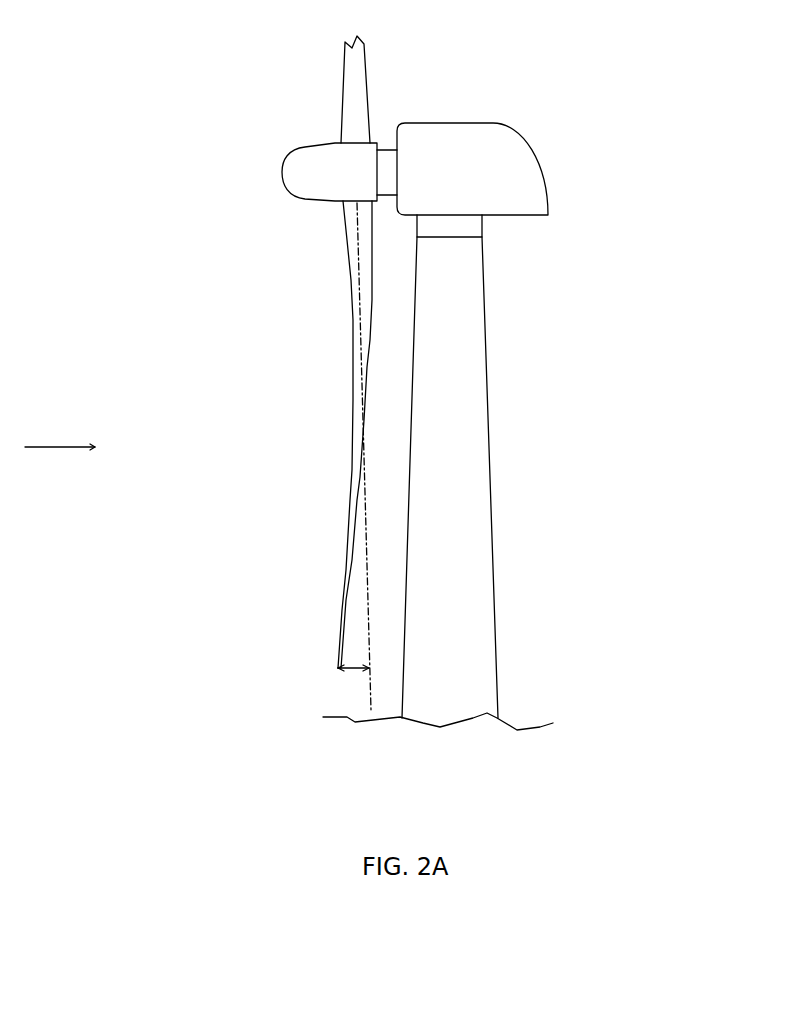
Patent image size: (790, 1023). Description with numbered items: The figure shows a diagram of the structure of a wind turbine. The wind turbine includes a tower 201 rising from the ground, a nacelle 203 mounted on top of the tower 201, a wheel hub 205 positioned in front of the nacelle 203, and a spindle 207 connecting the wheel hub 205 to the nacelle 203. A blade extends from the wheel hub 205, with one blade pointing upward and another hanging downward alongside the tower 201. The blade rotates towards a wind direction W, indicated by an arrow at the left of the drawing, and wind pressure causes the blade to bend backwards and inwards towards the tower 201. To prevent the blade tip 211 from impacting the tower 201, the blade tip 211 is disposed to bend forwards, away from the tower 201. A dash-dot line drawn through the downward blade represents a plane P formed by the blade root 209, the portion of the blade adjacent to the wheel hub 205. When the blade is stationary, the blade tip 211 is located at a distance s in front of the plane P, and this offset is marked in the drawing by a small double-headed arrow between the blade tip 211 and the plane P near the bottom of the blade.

The tower 201 is at (472, 428).
The nacelle 203 is at (533, 188).
The wheel hub 205 is at (330, 158).
The spindle 207 is at (383, 157).
The blade root 209 is at (311, 352).
The blade tip 211 is at (350, 520).
The plane formed by the blade root P is at (368, 637).
The distance s is at (345, 670).
The wind direction W is at (60, 433).